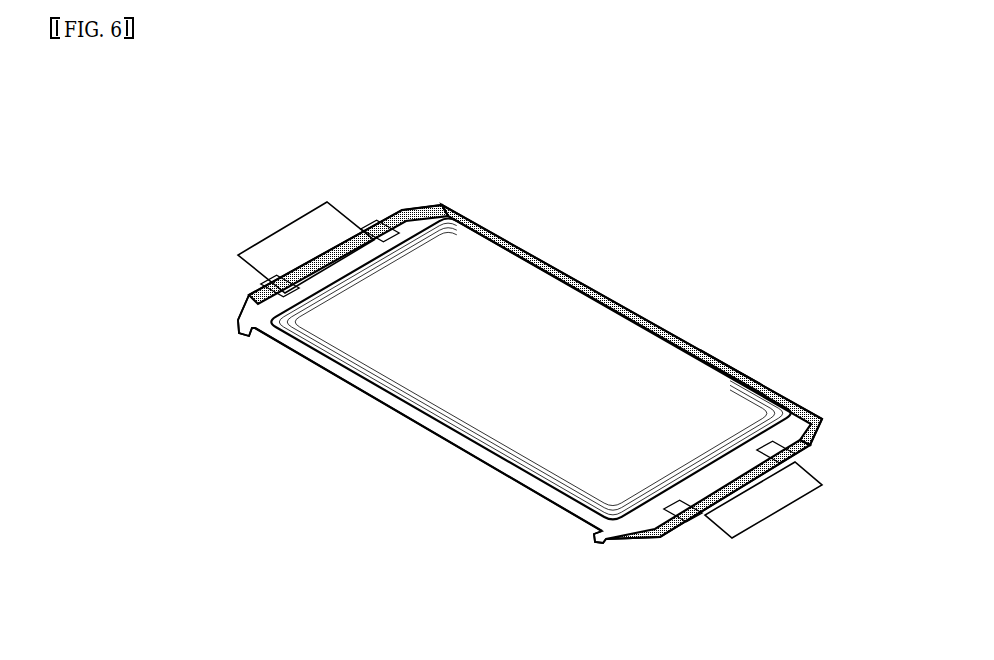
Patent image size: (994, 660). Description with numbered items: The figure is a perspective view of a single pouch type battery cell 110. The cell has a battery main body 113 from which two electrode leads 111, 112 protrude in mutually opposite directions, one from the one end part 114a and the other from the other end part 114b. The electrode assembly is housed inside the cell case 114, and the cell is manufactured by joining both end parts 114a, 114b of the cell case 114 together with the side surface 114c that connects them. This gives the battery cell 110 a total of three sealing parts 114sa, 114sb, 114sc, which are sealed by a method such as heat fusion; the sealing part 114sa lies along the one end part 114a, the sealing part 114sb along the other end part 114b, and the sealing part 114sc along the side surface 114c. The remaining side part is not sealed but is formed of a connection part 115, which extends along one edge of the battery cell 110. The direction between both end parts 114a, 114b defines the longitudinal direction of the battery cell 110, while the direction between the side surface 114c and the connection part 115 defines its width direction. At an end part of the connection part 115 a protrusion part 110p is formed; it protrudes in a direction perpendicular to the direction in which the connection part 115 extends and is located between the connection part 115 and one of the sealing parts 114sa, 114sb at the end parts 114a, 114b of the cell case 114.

The battery cell 110 is at (190, 94).
The protrusion part 110p is at (238, 321).
The electrode lead 111 is at (300, 236).
The electrode lead 112 is at (783, 515).
The battery main body 113 is at (540, 300).
The cell case 114 is at (557, 378).
The one end part 114a is at (420, 218).
The other end part 114b is at (640, 522).
The side surface 114c is at (638, 318).
The sealing part 114sa is at (395, 217).
The sealing part 114sb is at (806, 445).
The sealing part 114sc is at (737, 358).
The connection part 115 is at (455, 442).